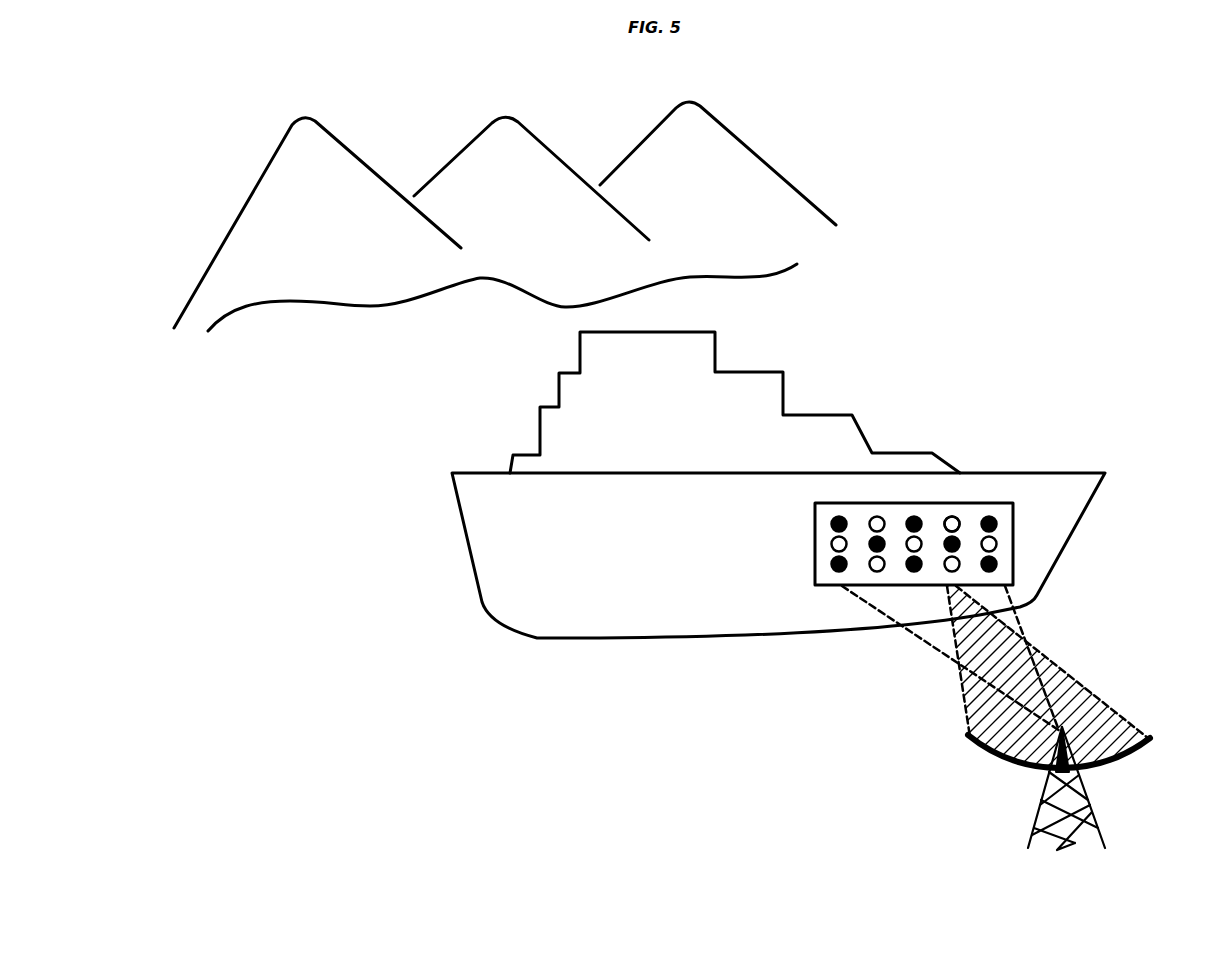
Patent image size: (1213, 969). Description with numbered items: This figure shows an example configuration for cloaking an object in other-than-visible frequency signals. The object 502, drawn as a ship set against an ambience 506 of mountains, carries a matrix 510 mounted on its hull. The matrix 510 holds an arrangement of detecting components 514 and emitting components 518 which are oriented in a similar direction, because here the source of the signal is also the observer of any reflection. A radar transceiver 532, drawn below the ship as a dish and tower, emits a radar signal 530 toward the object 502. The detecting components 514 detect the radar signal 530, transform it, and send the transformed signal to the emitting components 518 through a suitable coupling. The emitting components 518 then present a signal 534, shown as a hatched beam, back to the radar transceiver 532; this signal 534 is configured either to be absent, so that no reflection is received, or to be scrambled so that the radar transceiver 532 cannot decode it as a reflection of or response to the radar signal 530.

The object 502 is at (571, 560).
The ambience 506 is at (372, 160).
The matrix 510 is at (926, 490).
The detecting components 514 is at (830, 522).
The emitting components 518 is at (952, 517).
The radar signal 530 is at (932, 646).
The radar transceiver 532 is at (980, 755).
The obfuscated signal 534 is at (960, 705).